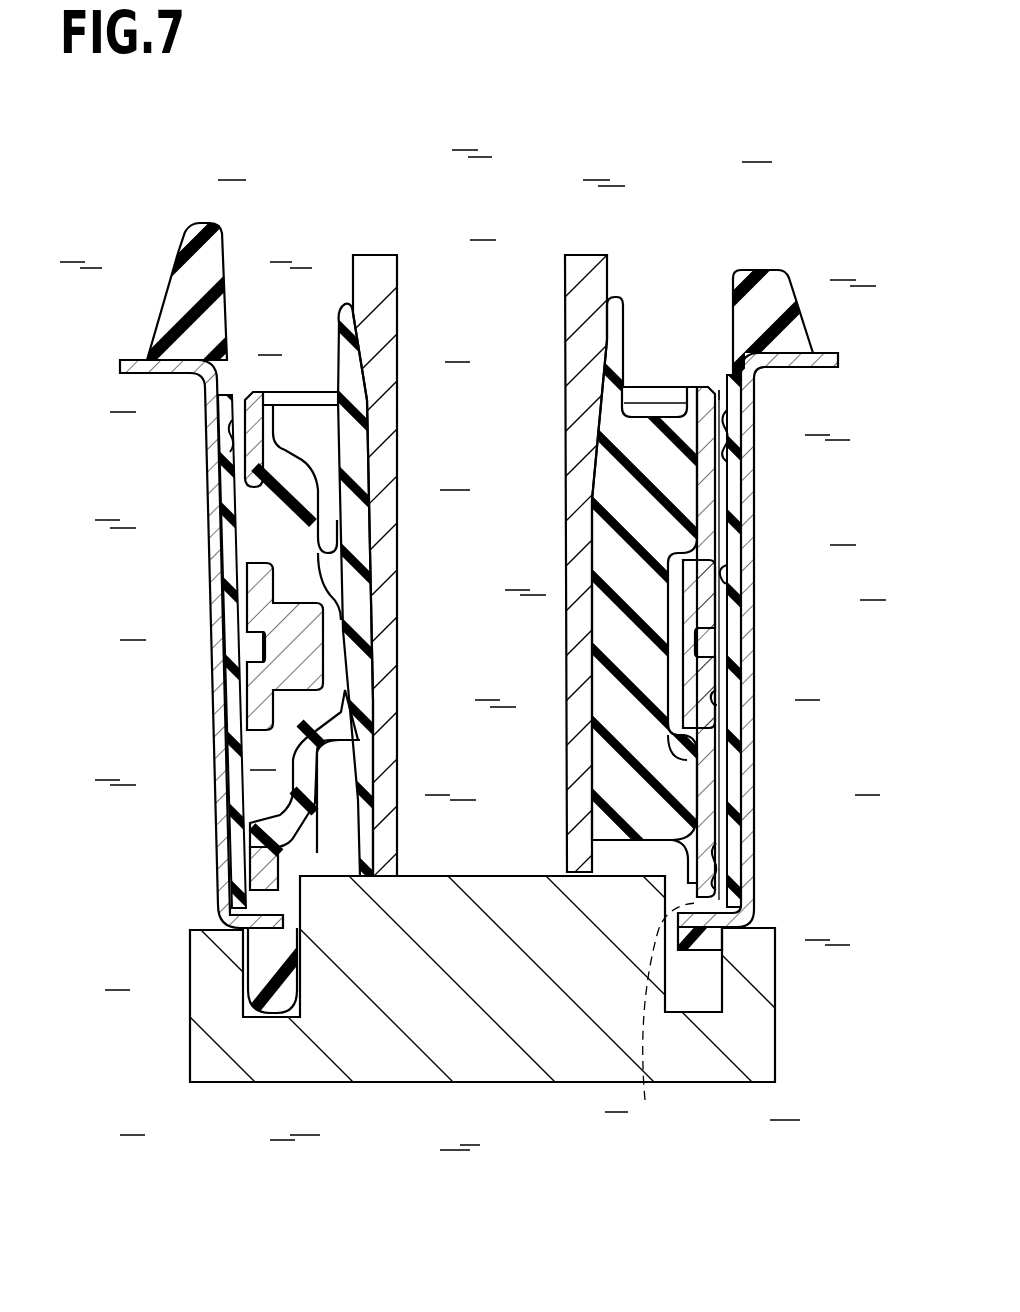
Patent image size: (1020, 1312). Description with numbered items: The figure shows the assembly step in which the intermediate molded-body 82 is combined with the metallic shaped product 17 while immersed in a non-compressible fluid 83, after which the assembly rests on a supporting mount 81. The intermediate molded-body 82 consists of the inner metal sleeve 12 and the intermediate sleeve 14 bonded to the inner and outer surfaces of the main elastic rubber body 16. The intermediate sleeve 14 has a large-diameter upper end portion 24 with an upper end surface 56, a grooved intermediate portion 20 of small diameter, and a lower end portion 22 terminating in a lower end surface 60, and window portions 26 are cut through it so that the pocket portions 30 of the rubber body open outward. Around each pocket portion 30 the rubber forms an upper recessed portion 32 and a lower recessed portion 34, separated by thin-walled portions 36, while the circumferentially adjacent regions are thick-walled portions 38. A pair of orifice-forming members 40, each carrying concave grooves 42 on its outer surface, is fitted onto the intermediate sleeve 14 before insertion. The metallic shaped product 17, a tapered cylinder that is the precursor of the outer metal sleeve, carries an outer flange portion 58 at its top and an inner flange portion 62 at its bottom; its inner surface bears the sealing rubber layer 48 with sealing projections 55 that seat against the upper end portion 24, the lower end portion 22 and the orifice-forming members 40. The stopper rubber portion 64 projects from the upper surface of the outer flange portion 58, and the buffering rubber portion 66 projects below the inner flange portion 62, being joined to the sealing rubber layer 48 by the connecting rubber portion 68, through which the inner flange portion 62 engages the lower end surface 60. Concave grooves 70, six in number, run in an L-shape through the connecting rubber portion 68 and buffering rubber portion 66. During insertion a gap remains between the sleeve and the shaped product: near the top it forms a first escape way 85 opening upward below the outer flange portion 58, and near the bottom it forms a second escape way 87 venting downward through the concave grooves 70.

The inner metal sleeve 12 is at (379, 244).
The intermediate sleeve 14 is at (726, 498).
The main elastic rubber body 16 is at (624, 856).
The metallic shaped product 17 is at (204, 704).
The intermediate portion 20 is at (672, 637).
The lower end portion 22 is at (747, 795).
The upper end portion 24 is at (705, 468).
The window portions 26 is at (253, 482).
The pocket portions 30 is at (287, 523).
The upper recessed portion 32 is at (316, 498).
The lower recessed portion 34 is at (327, 790).
The thin-walled portions 36 is at (300, 542).
The thick-walled portion 38 is at (668, 768).
The orifice-forming members 40 is at (238, 606).
The concave grooves 42 is at (245, 636).
The sealing rubber layer 48 is at (214, 824).
The sealing projections 55 is at (725, 417).
The upper end surface 56 is at (703, 412).
The outer flange portion 58 is at (128, 360).
The lower end surface 60 is at (262, 925).
The inner flange portion 62 is at (267, 923).
The stopper rubber portion 64 is at (778, 297).
The buffering rubber portion 66 is at (705, 933).
The connecting rubber portion 68 is at (252, 912).
The concave grooves 70 is at (618, 1112).
The supporting mount 81 is at (497, 1065).
The intermediate molded-body 82 is at (604, 210).
The non-compressible fluid 83 is at (403, 188).
The first escape way 85 is at (721, 400).
The second escape way 87 is at (724, 922).